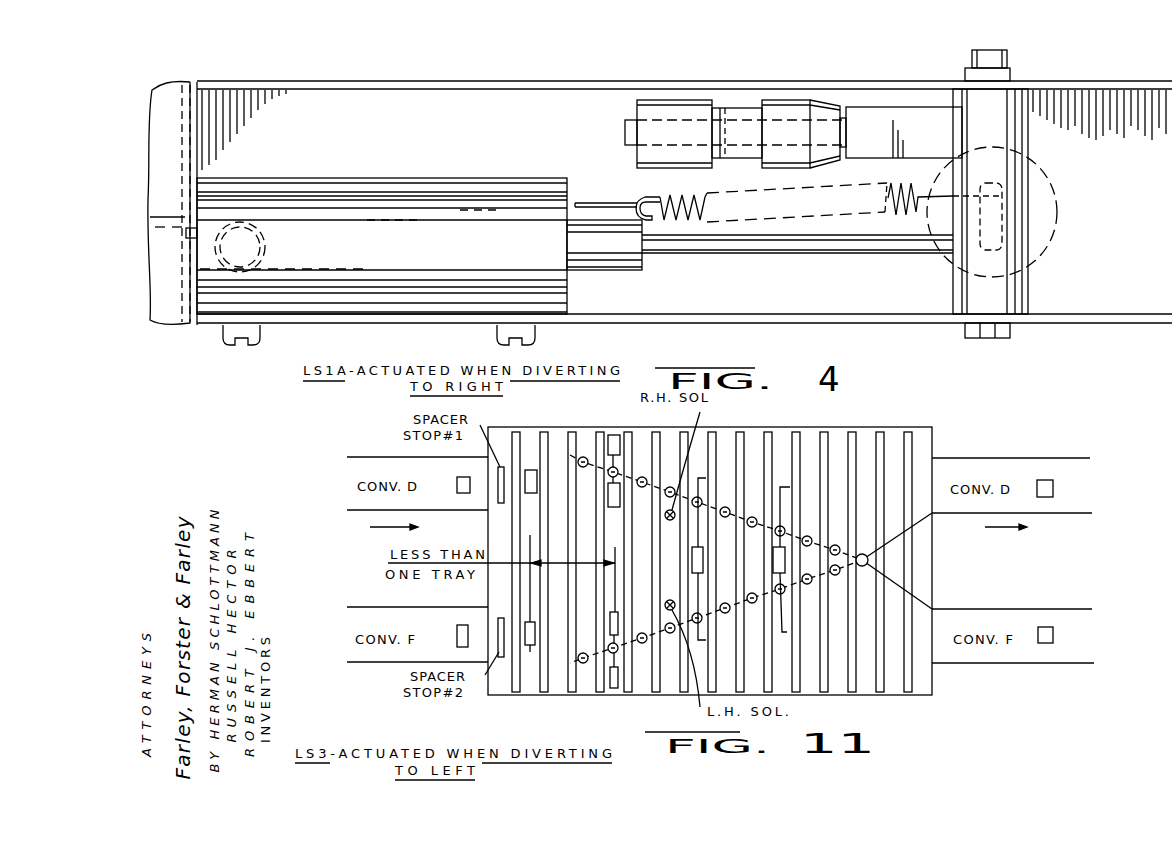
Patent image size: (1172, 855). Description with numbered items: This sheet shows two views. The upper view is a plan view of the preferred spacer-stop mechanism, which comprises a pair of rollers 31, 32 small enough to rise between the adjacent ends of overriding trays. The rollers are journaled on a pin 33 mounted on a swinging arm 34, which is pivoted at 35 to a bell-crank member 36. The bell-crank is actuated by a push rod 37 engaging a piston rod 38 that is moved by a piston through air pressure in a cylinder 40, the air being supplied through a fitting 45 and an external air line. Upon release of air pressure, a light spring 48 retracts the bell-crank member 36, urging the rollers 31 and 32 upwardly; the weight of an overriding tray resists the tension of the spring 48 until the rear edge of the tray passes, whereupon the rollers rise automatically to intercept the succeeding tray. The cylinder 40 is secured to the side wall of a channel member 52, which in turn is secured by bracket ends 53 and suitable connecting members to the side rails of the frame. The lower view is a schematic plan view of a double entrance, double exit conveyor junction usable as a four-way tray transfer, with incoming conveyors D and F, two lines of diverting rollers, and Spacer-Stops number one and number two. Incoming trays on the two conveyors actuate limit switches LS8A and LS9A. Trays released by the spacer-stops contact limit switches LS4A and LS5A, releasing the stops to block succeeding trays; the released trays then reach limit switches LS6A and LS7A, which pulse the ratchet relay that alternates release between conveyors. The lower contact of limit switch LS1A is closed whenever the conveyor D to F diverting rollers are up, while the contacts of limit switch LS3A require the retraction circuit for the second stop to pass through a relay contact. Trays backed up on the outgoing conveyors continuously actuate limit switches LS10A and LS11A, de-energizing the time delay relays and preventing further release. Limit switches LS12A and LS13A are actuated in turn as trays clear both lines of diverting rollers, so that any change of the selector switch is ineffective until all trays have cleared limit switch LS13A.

In FIG. 4, the roller 31 is at (640, 150).
In FIG. 4, the roller 32 is at (792, 110).
In FIG. 4, the pin 33 is at (846, 134).
In FIG. 4, the swinging arm 34 is at (878, 156).
In FIG. 4, the pivot 35 is at (997, 325).
In FIG. 4, the bell-crank member 36 is at (1060, 225).
In FIG. 4, the push rod 37 is at (852, 247).
In FIG. 4, the piston rod 38 is at (617, 262).
In FIG. 4, the cylinder 40 is at (432, 298).
In FIG. 4, the fitting 45 is at (268, 246).
In FIG. 4, the light spring 48 is at (818, 195).
In FIG. 4, the channel member 52 is at (618, 318).
In FIG. 4, the bracket ends 53 is at (173, 303).
In FIG. 11, the limit switch LS1A is at (613, 433).
In FIG. 11, the limit switch LS3A is at (614, 678).
In FIG. 11, the limit switch LS4A is at (530, 470).
In FIG. 11, the limit switch LS5A is at (533, 647).
In FIG. 11, the limit switch LS6A is at (620, 488).
In FIG. 11, the limit switch LS7A is at (615, 623).
In FIG. 11, the limit switch LS8A is at (470, 472).
In FIG. 11, the limit switch LS9A is at (462, 636).
In FIG. 11, the limit switch LS10A is at (1053, 489).
In FIG. 11, the limit switch LS11A is at (1053, 635).
In FIG. 11, the limit switch LS12A is at (700, 553).
In FIG. 11, the limit switch LS13A is at (782, 565).